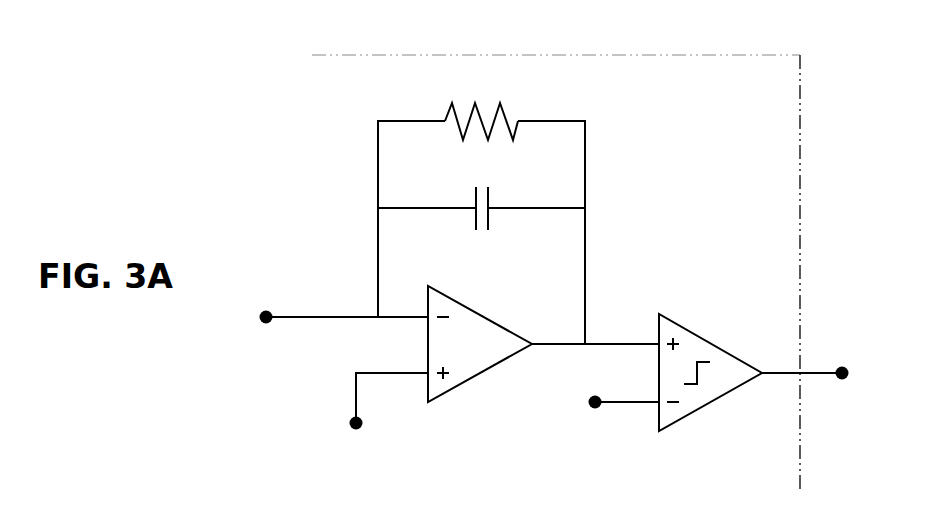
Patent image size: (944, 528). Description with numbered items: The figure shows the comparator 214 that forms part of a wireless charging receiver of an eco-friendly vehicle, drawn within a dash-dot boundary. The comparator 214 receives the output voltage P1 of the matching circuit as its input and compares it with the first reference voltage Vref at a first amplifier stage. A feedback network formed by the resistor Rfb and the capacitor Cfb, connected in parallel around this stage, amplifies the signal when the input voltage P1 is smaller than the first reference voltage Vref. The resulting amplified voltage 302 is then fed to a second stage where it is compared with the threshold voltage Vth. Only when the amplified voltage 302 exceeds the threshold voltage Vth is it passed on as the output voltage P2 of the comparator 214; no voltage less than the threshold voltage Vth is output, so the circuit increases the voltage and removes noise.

The comparator 214 is at (625, 55).
The amplified voltage 302 is at (607, 343).
The output voltage of the matching circuit P1 is at (325, 316).
The output voltage of the comparator P2 is at (824, 371).
The first reference voltage Vref is at (381, 417).
The threshold voltage Vth is at (604, 398).
The resistor Rfb is at (481, 104).
The capacitor Cfb is at (482, 226).